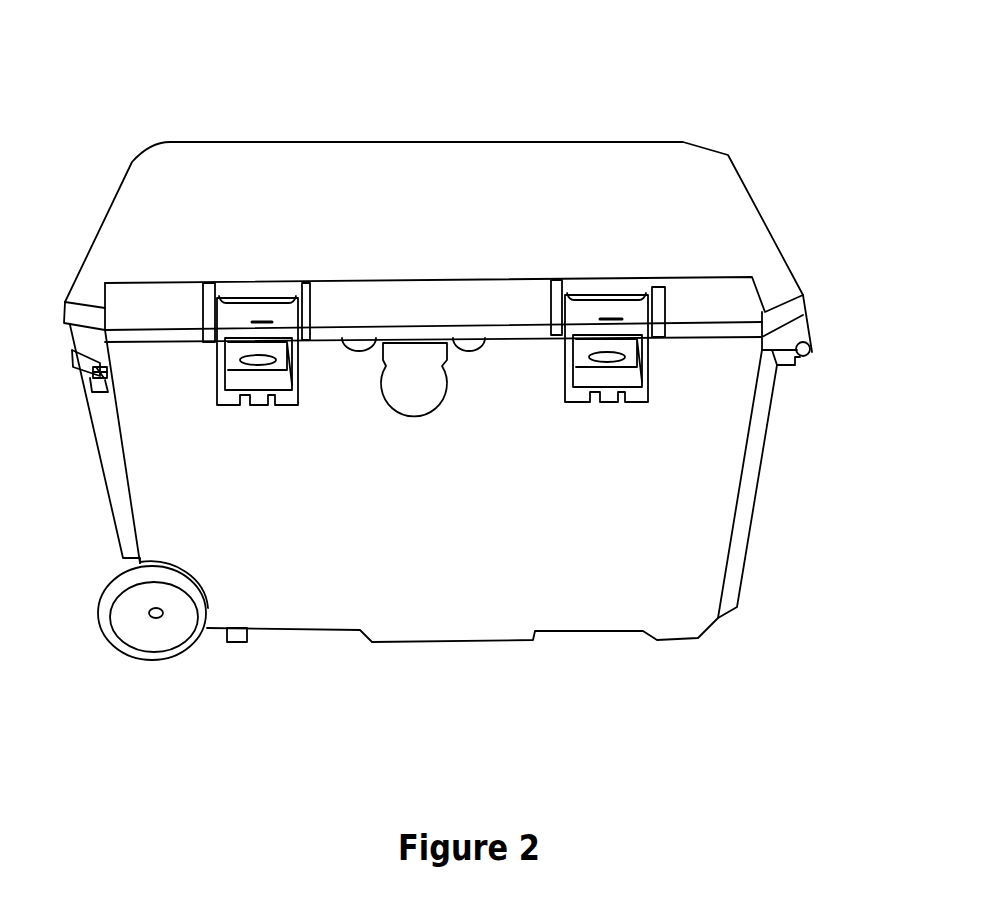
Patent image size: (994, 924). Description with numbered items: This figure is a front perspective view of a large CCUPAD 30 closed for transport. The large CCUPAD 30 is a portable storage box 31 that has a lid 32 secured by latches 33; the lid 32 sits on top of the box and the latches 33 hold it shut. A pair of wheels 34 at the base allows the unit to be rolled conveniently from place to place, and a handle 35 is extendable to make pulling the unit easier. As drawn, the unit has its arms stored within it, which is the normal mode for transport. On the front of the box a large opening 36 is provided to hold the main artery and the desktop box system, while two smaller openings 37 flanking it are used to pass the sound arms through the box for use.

The large CCUPAD 30 is at (157, 177).
The portable storage box 31 is at (122, 497).
The lid 32 is at (463, 162).
The latches 33 is at (254, 412).
The wheels 34 is at (153, 653).
The handle 35 is at (817, 355).
The large opening 36 is at (413, 407).
The smaller openings 37 is at (362, 355).